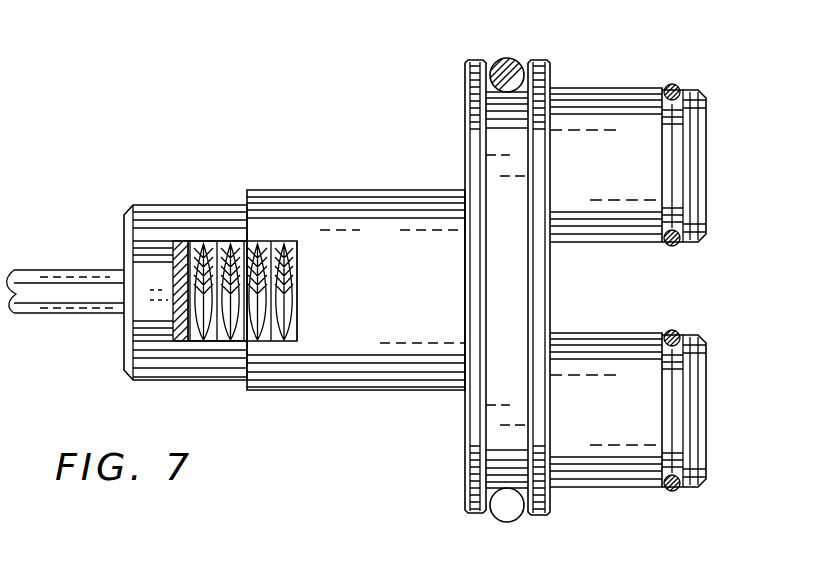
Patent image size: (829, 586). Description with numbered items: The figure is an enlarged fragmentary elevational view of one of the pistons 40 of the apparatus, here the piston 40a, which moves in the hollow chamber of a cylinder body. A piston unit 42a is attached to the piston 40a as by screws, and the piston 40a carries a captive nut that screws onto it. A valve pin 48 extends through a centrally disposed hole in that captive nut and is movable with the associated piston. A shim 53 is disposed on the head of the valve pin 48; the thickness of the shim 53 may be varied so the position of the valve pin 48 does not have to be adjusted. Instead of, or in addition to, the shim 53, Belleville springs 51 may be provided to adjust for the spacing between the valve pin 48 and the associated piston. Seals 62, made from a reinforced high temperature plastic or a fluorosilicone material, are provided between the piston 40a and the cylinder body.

The piston 40 is at (546, 292).
The piston 40a is at (467, 452).
The piston unit 42a is at (625, 368).
The valve pin 48 is at (58, 290).
The Belleville spring 51 is at (291, 246).
The shim 53 is at (182, 250).
The seal 62 is at (518, 58).